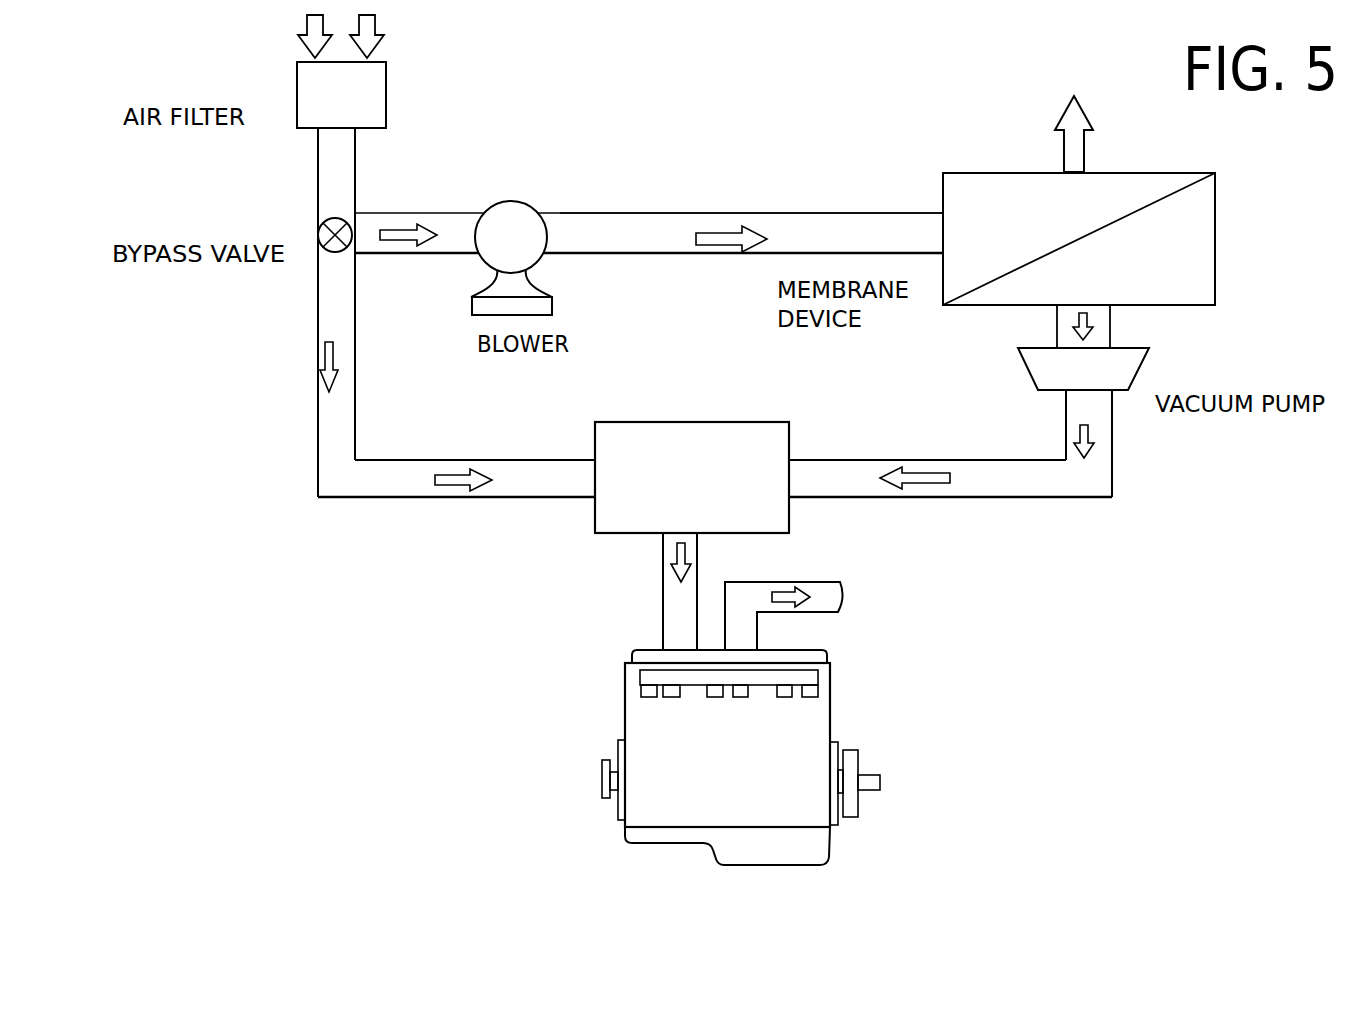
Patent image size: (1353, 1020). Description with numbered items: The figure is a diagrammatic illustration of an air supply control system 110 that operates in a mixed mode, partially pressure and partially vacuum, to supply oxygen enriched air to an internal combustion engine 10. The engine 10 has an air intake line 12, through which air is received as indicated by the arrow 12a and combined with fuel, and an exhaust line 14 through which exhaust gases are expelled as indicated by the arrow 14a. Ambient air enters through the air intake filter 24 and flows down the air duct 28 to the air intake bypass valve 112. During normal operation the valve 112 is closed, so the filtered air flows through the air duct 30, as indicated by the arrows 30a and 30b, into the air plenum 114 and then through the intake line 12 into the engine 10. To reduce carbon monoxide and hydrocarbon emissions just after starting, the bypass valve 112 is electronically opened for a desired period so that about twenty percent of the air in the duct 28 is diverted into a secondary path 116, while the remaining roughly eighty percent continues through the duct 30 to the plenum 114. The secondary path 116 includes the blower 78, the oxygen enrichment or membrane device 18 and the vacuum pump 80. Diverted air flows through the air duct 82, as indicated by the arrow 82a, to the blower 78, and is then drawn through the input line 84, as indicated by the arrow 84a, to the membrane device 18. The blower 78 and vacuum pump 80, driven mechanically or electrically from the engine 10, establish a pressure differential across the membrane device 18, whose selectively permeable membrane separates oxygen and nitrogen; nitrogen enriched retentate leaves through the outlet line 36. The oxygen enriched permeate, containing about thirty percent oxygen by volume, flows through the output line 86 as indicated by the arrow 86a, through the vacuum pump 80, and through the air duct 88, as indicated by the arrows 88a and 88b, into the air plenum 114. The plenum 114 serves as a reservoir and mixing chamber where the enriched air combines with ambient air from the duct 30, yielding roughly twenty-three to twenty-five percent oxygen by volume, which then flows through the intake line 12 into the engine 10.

The air supply control system 110 is at (690, 123).
The air intake filter 24 is at (386, 90).
The air duct 28 is at (355, 153).
The air intake bypass valve 112 is at (318, 230).
The air duct 30 is at (318, 305).
The arrow 30a is at (318, 368).
The arrow 30b is at (455, 490).
The air duct 82 is at (437, 253).
The arrow 82a is at (398, 229).
The blower 78 is at (528, 203).
The input line 84 is at (720, 213).
The arrow 84a is at (722, 253).
The secondary path 116 is at (696, 318).
The oxygen enrichment device 18 is at (992, 173).
The outlet line 36 is at (1086, 137).
The output line 86 is at (1112, 328).
The arrow 86a is at (1078, 322).
The vacuum pump 80 is at (1145, 362).
The air duct 88 is at (1065, 418).
The arrow 88a is at (1092, 433).
The arrow 88b is at (945, 493).
The air plenum 114 is at (700, 422).
The air intake line 12 is at (663, 598).
The arrow 12a is at (663, 549).
The exhaust line 14 is at (836, 612).
The arrow 14a is at (788, 588).
The internal combustion engine 10 is at (587, 814).